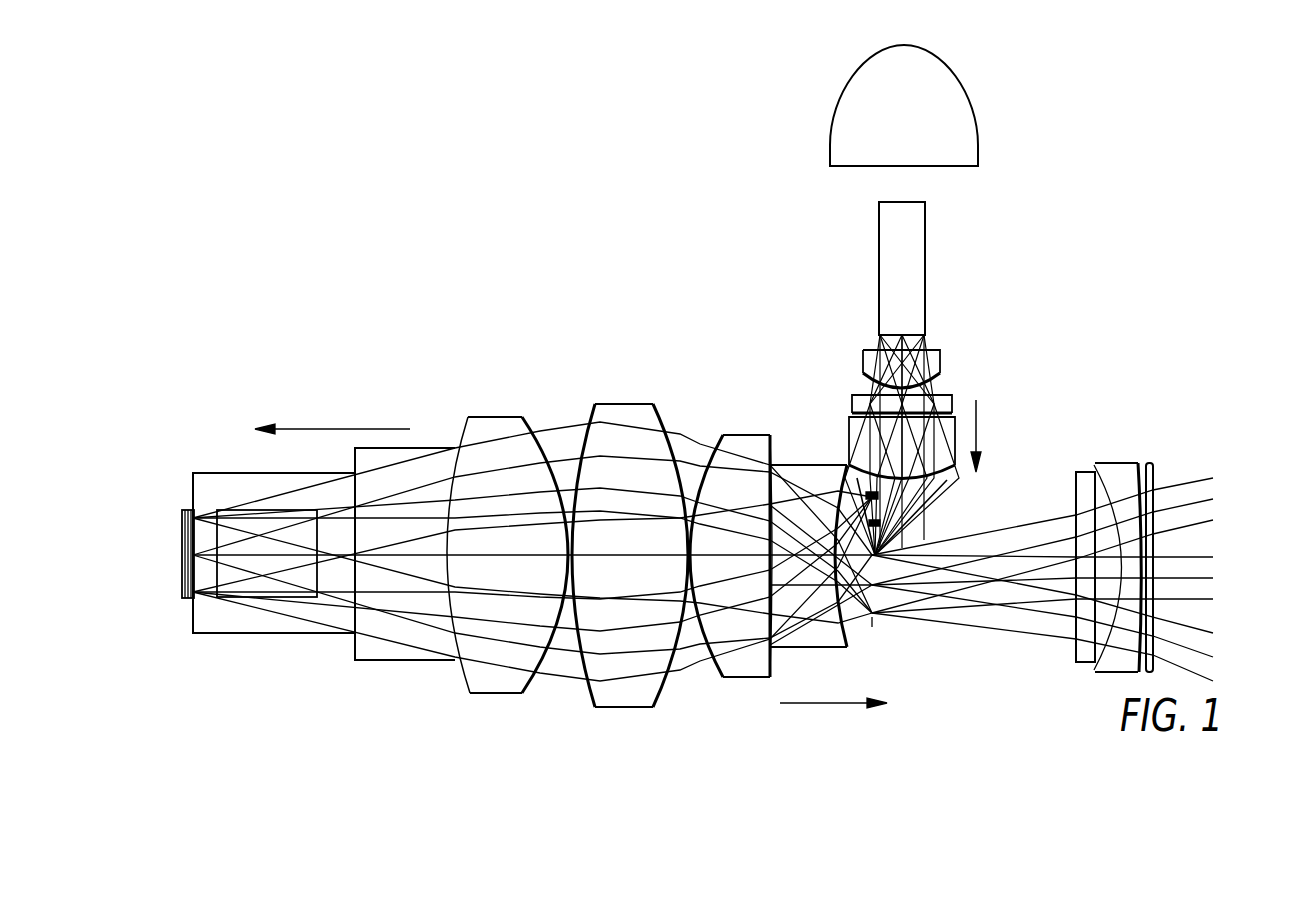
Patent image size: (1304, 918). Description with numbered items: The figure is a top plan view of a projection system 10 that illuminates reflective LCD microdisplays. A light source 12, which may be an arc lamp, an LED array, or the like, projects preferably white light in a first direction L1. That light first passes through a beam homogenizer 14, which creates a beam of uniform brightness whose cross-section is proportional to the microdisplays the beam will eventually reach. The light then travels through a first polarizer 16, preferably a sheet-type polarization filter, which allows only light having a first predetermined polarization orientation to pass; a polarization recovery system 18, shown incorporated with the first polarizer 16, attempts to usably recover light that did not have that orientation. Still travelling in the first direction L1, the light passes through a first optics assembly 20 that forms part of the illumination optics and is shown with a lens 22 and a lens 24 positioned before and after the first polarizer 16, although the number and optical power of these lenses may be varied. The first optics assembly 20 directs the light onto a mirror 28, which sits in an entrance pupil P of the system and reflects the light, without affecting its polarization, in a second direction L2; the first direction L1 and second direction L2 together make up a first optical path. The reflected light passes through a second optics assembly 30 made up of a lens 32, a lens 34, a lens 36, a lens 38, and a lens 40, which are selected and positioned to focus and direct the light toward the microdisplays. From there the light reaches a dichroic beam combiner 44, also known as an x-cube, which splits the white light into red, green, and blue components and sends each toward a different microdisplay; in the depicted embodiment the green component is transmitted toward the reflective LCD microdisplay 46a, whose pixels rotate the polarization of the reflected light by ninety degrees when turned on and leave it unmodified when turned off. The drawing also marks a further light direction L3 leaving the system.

The projection system 10 is at (462, 308).
The light source 12 is at (841, 103).
The beam homogenizer 14 is at (887, 221).
The first polarizer 16 is at (952, 397).
The polarization recovery system 18 is at (902, 404).
The first optics assembly 20 is at (840, 339).
The lens 22 is at (940, 352).
The lens 24 is at (852, 433).
The mirror 28 is at (945, 481).
The second optics assembly 30 is at (780, 397).
The lens 32 is at (807, 642).
The lens 34 is at (757, 670).
The lens 36 is at (626, 710).
The lens 38 is at (492, 695).
The lens 40 is at (383, 650).
The dichroic beam combiner 44 is at (214, 627).
The reflective LCD microdisplay 46a is at (183, 510).
The entrance pupil P is at (892, 627).
The first direction L1 is at (989, 436).
The second direction L2 is at (332, 412).
The outgoing light direction L3 is at (833, 720).